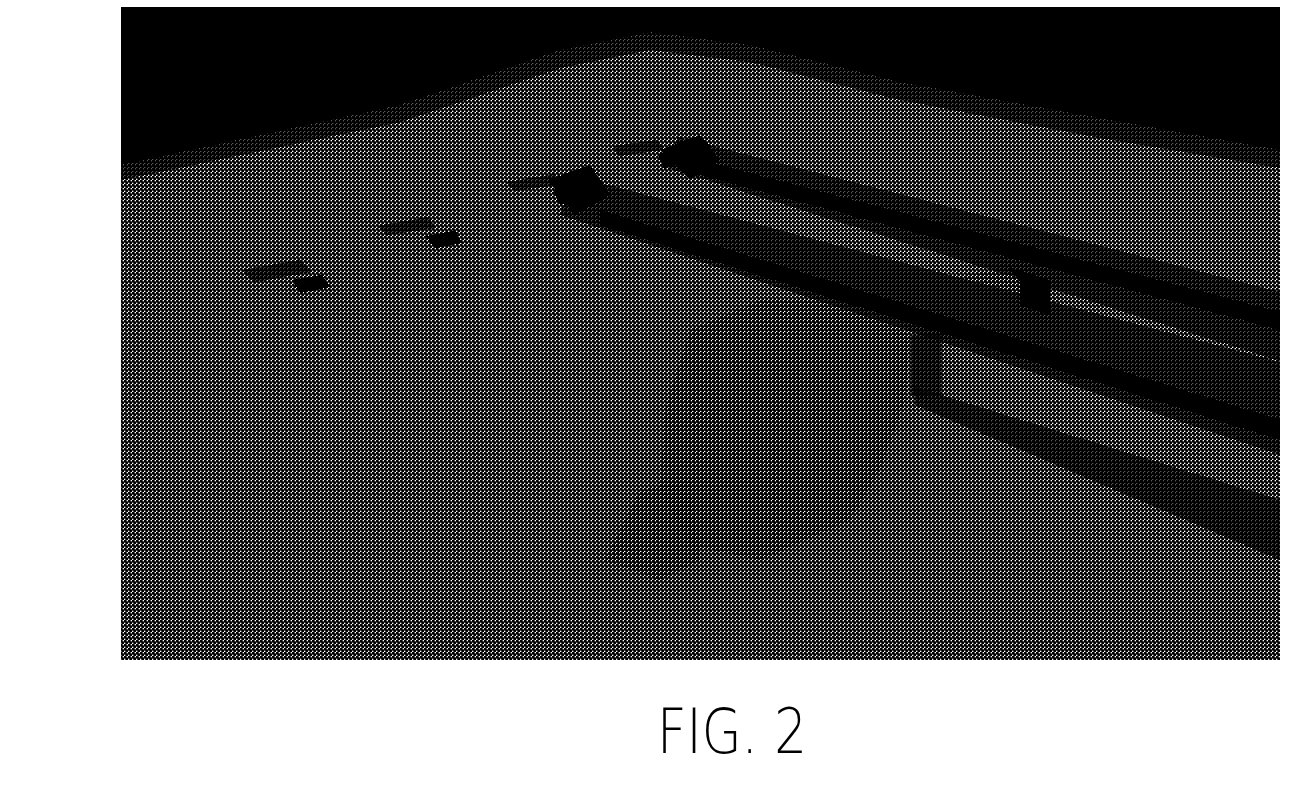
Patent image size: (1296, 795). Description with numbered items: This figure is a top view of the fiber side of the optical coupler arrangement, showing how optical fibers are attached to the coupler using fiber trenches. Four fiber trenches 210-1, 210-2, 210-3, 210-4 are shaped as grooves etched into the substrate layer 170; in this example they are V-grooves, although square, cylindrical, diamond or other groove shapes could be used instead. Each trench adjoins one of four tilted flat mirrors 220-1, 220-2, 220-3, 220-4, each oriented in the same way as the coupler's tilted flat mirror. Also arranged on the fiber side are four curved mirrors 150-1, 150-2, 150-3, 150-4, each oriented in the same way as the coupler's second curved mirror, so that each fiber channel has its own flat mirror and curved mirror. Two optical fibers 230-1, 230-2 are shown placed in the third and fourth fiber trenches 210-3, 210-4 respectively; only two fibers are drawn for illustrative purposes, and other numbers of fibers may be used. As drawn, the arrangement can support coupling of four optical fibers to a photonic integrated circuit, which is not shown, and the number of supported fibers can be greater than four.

The curved mirror 150-1 is at (252, 262).
The curved mirror 150-2 is at (388, 220).
The curved mirror 150-3 is at (510, 185).
The curved mirror 150-4 is at (616, 148).
The tilted flat mirror 220-1 is at (326, 278).
The tilted flat mirror 220-2 is at (454, 235).
The tilted flat mirror 220-3 is at (568, 188).
The tilted flat mirror 220-4 is at (674, 152).
The optical fiber 230-1 is at (790, 178).
The optical fiber 230-2 is at (700, 235).
The fiber trench 210-1 is at (690, 490).
The fiber trench 210-2 is at (822, 420).
The fiber trench 210-3 is at (925, 395).
The fiber trench 210-4 is at (1030, 270).
The substrate layer 170 is at (1152, 172).